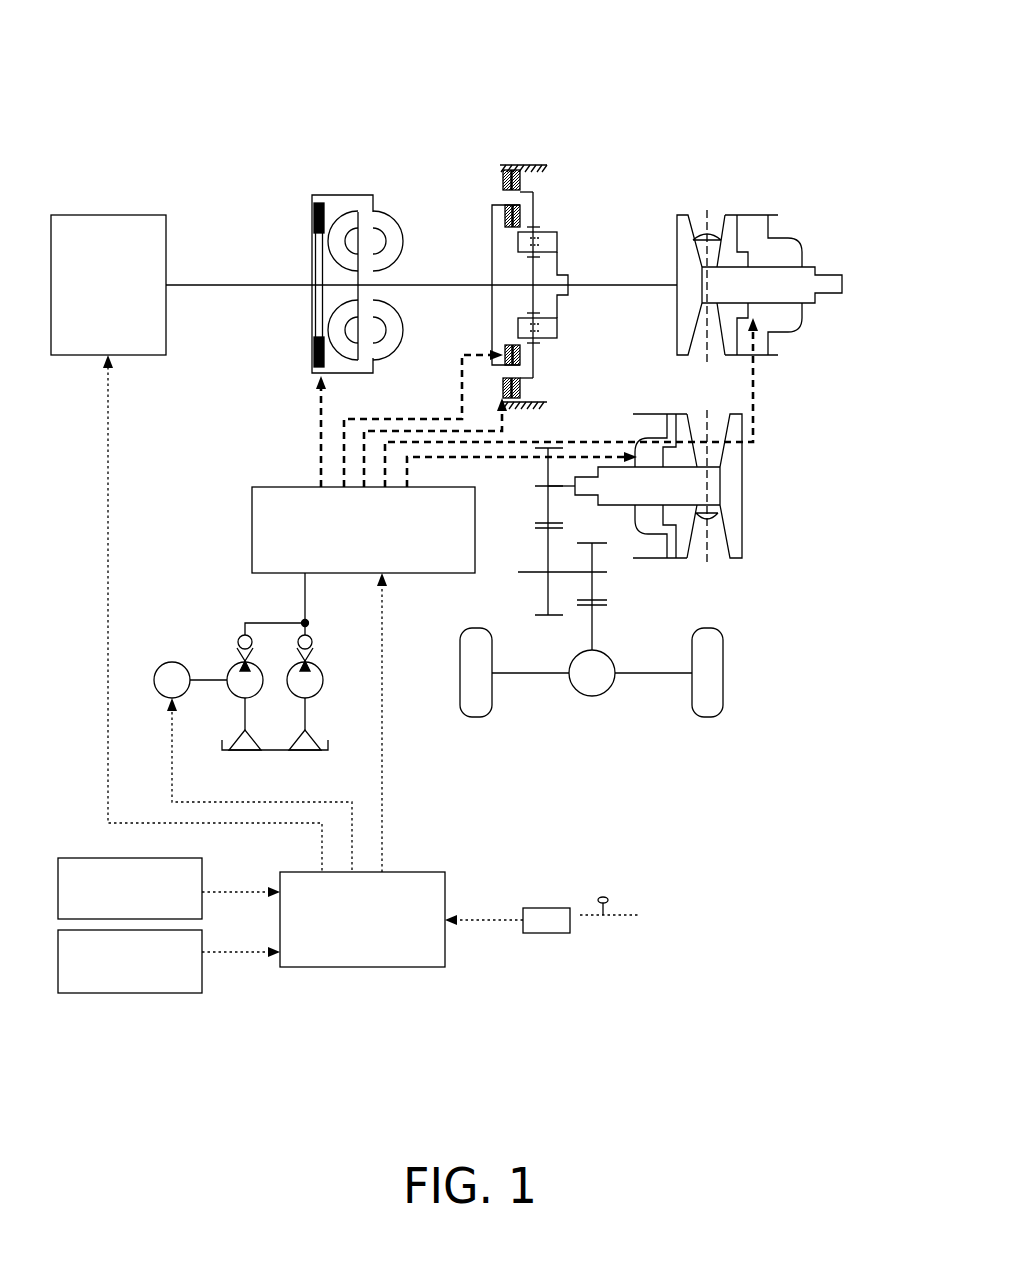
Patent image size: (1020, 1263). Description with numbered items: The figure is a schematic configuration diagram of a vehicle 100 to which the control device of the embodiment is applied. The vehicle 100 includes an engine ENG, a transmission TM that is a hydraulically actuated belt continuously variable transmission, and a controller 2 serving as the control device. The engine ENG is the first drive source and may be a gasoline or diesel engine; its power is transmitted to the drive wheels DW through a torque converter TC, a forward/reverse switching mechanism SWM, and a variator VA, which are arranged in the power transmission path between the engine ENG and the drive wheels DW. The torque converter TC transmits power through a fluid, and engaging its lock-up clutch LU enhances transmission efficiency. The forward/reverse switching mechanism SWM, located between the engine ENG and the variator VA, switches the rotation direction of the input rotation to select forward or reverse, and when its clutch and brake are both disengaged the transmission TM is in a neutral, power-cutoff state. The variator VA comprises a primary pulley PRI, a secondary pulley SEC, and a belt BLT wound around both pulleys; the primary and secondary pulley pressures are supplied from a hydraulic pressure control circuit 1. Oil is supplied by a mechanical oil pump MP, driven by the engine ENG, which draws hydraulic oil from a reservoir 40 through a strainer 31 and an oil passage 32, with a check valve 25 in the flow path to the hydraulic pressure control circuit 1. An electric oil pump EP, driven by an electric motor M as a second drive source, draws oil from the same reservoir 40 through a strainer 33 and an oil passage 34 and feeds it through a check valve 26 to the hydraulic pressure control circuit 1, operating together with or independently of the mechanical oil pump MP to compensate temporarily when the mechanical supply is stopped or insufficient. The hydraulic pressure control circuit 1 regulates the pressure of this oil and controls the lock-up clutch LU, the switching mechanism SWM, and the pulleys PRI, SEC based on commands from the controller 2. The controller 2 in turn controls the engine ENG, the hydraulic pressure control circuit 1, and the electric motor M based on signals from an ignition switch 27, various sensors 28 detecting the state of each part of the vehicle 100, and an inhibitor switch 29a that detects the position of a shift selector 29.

The vehicle 100 is at (130, 95).
The engine ENG is at (108, 215).
The torque converter TC is at (352, 180).
The lock-up clutch LU is at (312, 360).
The forward/reverse switching mechanism SWM is at (508, 136).
The transmission TM is at (822, 115).
The variator VA is at (740, 170).
The primary pulley PRI is at (802, 244).
The secondary pulley SEC is at (742, 513).
The belt BLT is at (713, 526).
The drive wheels DW is at (460, 673).
The hydraulic pressure control circuit 1 is at (252, 540).
The check valve 26 is at (243, 635).
The check valve 25 is at (308, 636).
The electric motor M is at (172, 662).
The electric oil pump EP is at (237, 697).
The mechanical oil pump MP is at (319, 694).
The oil passage 34 is at (243, 718).
The oil passage 32 is at (304, 726).
The strainer 33 is at (242, 752).
The strainer 31 is at (295, 752).
The reservoir (oil pan) 40 is at (313, 755).
The controller 2 is at (370, 968).
The ignition switch 27 is at (108, 857).
The various sensors 28 is at (140, 993).
The inhibitor switch 29a is at (563, 933).
The shift selector 29 is at (608, 900).